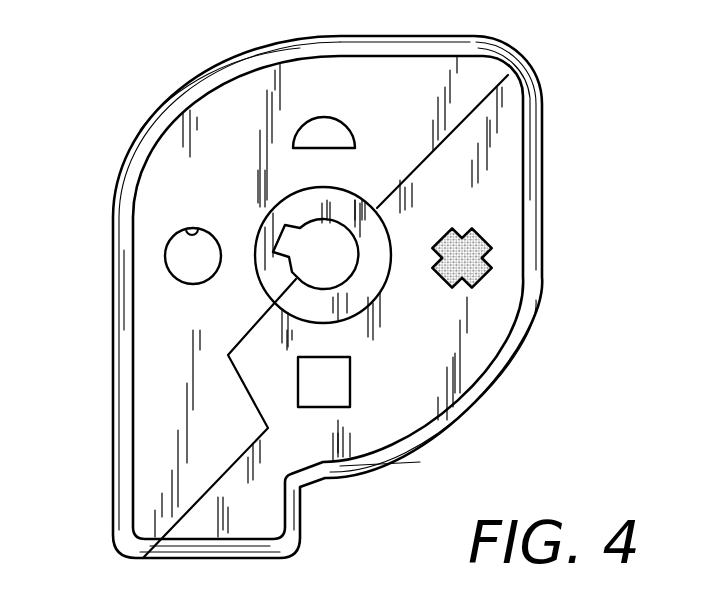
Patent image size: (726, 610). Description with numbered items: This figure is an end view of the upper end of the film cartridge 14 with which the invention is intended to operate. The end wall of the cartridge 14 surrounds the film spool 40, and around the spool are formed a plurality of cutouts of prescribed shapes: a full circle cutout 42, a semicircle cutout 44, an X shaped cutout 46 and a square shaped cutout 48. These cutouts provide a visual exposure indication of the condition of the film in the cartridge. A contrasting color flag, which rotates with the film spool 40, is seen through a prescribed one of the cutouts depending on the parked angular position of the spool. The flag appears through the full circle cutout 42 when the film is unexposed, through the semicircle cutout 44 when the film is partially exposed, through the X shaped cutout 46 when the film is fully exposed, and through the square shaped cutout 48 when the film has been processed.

The cartridge 14 is at (111, 308).
The film spool 40 is at (296, 279).
The full circle cutout 42 is at (192, 229).
The semicircle cutout 44 is at (347, 135).
The X shaped cutout 46 is at (460, 233).
The square shaped cutout 48 is at (350, 378).